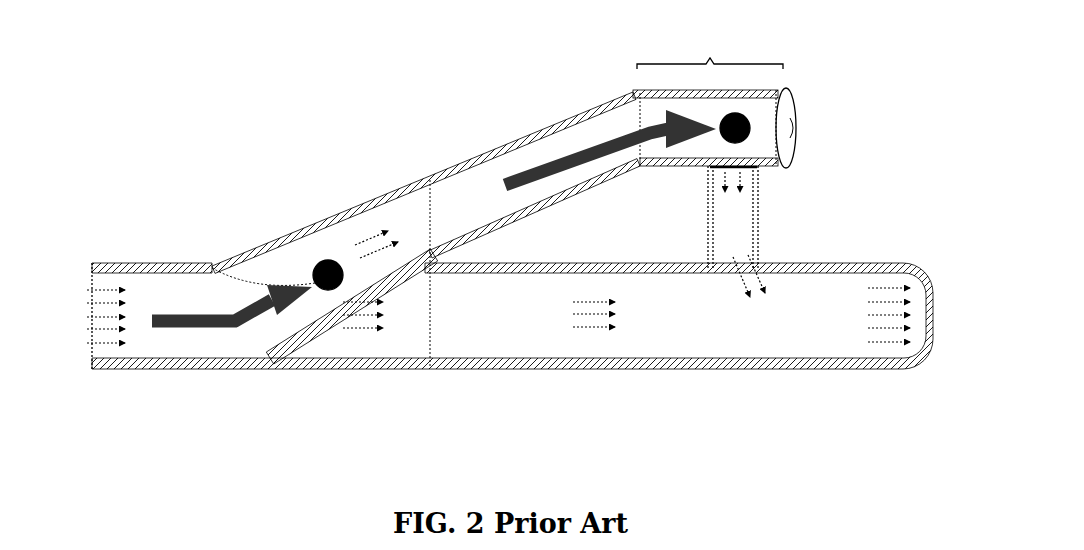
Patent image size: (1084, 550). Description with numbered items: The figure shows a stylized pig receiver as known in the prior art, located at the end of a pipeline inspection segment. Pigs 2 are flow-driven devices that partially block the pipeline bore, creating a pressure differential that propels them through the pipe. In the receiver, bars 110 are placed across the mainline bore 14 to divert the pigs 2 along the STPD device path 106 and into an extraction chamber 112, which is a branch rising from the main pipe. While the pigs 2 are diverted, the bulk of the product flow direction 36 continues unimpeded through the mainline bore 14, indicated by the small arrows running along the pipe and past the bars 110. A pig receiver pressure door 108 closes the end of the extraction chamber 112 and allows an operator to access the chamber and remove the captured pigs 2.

The pig 2 is at (322, 262).
The mainline bore 14 is at (566, 366).
The product flow direction 36 is at (112, 287).
The STPD device path 106 is at (195, 312).
The pig receiver pressure door 108 is at (796, 110).
The bars 110 is at (706, 188).
The extraction chamber 112 is at (710, 60).